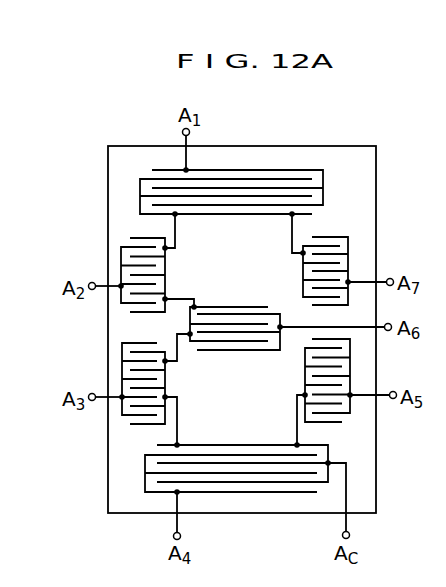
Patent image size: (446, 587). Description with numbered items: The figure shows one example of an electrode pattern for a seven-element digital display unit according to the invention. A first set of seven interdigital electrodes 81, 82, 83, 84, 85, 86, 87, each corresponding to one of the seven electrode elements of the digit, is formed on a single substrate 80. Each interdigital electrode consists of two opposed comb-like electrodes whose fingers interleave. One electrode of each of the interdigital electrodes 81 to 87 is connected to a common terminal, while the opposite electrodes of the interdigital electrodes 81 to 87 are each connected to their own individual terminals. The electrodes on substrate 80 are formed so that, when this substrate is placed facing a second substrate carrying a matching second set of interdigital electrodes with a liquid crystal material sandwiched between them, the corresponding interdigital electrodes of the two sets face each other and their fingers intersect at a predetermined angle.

The substrate 80 is at (376, 200).
The interdigital electrode 81 is at (236, 169).
The interdigital electrode 82 is at (197, 280).
The interdigital electrode 83 is at (194, 384).
The interdigital electrode 84 is at (253, 442).
The interdigital electrode 85 is at (299, 385).
The interdigital electrode 86 is at (244, 302).
The interdigital electrode 87 is at (298, 278).